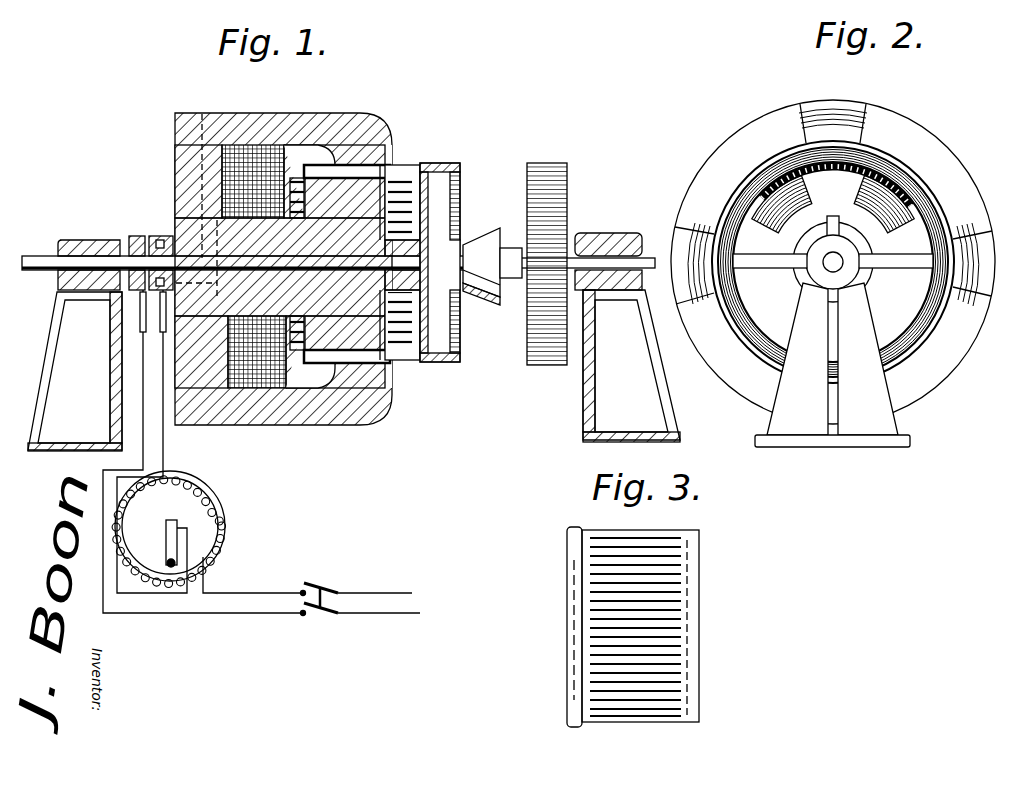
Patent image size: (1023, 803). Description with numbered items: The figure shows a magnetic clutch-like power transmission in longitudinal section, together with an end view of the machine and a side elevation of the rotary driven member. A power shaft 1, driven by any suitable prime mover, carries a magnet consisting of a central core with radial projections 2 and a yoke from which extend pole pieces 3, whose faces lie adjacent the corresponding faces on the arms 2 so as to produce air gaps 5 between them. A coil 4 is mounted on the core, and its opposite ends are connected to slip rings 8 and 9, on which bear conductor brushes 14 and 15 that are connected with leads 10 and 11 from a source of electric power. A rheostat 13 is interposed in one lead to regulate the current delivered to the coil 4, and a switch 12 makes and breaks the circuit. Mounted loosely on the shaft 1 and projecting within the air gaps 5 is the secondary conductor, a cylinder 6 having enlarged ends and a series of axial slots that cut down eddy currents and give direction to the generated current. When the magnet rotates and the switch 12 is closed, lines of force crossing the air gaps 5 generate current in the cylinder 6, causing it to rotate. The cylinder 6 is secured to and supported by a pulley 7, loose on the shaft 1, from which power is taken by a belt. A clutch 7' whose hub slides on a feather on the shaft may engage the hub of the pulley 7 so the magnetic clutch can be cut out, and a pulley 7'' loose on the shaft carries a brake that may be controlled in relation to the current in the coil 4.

In FIG. 1, the power shaft 1 is at (338, 250).
In FIG. 2, the power shaft 1 is at (838, 264).
In FIG. 1, the radial projections 2 is at (368, 185).
In FIG. 2, the radial projections 2 is at (826, 202).
In FIG. 1, the pole pieces 3 is at (368, 355).
In FIG. 2, the pole pieces 3 is at (858, 168).
In FIG. 1, the coil 4 is at (263, 388).
In FIG. 2, the coil 4 is at (752, 235).
In FIG. 1, the air gaps 5 is at (405, 178).
In FIG. 1, the cylinder 6 is at (440, 165).
In FIG. 2, the cylinder 6 is at (905, 195).
In FIG. 3, the cylinder 6 is at (699, 568).
In FIG. 1, the pulley 7 is at (432, 262).
In FIG. 1, the clutch 7' is at (492, 245).
In FIG. 1, the pulley 7'' is at (547, 244).
In FIG. 1, the slip ring 8 is at (136, 237).
In FIG. 1, the slip ring 9 is at (162, 237).
In FIG. 1, the lead 10 is at (380, 593).
In FIG. 1, the lead 11 is at (385, 613).
In FIG. 1, the switch 12 is at (316, 618).
In FIG. 1, the rheostat 13 is at (207, 532).
In FIG. 1, the conductor brush 14 is at (141, 314).
In FIG. 1, the conductor brush 15 is at (161, 338).